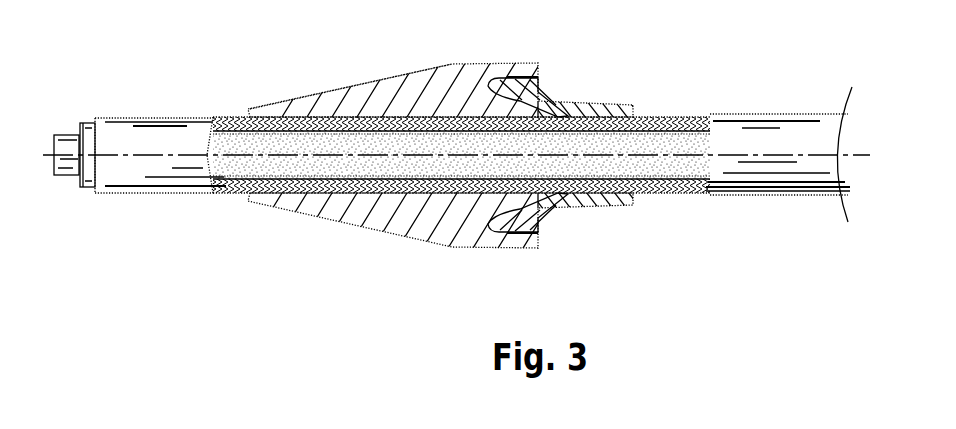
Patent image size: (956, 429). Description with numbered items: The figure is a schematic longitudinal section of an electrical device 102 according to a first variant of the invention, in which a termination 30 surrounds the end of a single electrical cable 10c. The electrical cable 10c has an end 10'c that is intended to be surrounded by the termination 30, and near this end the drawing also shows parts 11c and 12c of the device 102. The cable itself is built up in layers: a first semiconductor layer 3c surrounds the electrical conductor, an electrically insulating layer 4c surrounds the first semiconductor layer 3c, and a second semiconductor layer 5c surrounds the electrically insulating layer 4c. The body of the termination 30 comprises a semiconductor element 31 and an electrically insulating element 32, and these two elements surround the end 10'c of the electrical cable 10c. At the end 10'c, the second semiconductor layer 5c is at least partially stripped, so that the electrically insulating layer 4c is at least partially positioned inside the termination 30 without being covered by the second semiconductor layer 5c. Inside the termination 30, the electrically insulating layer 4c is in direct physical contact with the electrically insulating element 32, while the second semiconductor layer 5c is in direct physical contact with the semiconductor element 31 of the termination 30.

The device 102 is at (172, 292).
The electrical cable 10c is at (765, 86).
The end 10'c is at (351, 68).
The connector contact pin 11c is at (67, 170).
The connector body 12c is at (93, 172).
The first semiconductor layer 3c is at (232, 116).
The electrically insulating layer 4c is at (150, 128).
The second semiconductor layer 5c is at (688, 115).
The termination 30 is at (396, 255).
The semiconductor element 31 is at (514, 77).
The electrically insulating element 32 is at (437, 92).